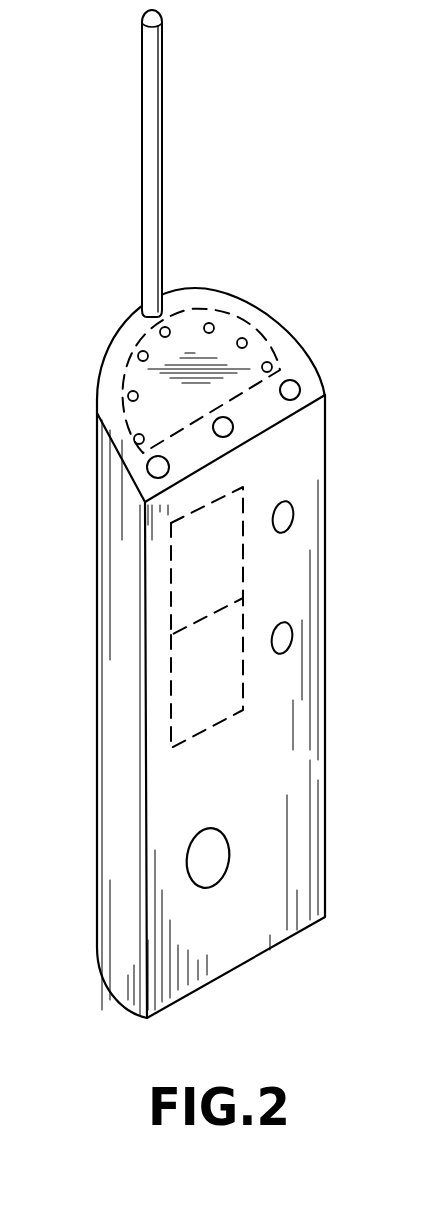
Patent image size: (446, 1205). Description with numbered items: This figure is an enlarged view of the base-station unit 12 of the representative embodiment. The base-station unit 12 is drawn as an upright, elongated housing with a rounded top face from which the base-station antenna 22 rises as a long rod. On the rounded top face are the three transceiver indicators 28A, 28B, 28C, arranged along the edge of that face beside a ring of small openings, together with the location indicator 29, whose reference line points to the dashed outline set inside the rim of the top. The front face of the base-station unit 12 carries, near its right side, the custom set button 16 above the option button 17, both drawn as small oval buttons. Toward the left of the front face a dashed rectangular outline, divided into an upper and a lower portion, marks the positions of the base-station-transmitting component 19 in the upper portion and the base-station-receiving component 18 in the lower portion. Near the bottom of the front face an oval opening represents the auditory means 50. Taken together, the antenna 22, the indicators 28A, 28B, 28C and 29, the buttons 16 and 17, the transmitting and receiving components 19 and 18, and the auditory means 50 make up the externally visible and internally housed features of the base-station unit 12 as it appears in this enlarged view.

The base-station unit 12 is at (130, 320).
The base-station antenna 22 is at (151, 108).
The location indicator 29 is at (225, 328).
The transceiver indicator 28A is at (152, 462).
The transceiver indicator 28B is at (228, 425).
The transceiver indicator 28C is at (292, 388).
The custom set button 16 is at (288, 512).
The option button 17 is at (285, 635).
The base-station-transmitting component 19 is at (183, 563).
The base-station-receiving component 18 is at (183, 707).
The auditory means 50 is at (200, 868).